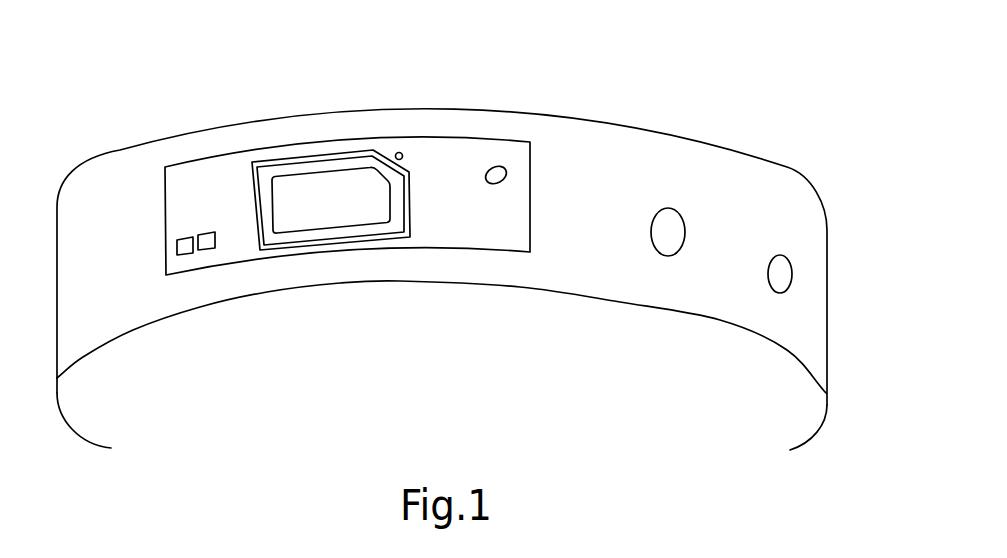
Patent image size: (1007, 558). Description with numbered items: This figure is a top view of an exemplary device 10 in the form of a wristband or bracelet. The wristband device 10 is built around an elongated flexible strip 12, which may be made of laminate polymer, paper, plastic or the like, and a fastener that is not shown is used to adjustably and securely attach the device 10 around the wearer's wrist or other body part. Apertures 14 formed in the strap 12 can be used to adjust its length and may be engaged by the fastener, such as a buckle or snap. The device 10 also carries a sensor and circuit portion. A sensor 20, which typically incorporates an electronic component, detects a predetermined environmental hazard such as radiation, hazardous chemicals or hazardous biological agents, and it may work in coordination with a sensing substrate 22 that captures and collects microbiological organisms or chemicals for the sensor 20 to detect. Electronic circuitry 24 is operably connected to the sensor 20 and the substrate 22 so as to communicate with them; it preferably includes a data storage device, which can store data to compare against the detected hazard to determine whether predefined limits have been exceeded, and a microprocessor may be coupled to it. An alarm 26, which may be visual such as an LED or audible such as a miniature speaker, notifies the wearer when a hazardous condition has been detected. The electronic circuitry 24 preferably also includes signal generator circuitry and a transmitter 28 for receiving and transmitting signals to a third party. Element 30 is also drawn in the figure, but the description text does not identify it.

The device 10 is at (678, 90).
The elongated flexible strip 12 is at (592, 233).
The apertures 14 is at (668, 232).
The sensor 20 is at (512, 160).
The sensing substrate 22 is at (195, 173).
The electronic circuitry 24 is at (367, 137).
The alarm 26 is at (210, 251).
The signal generator circuitry and transmitter 28 is at (188, 258).
The display screen 30 is at (413, 235).